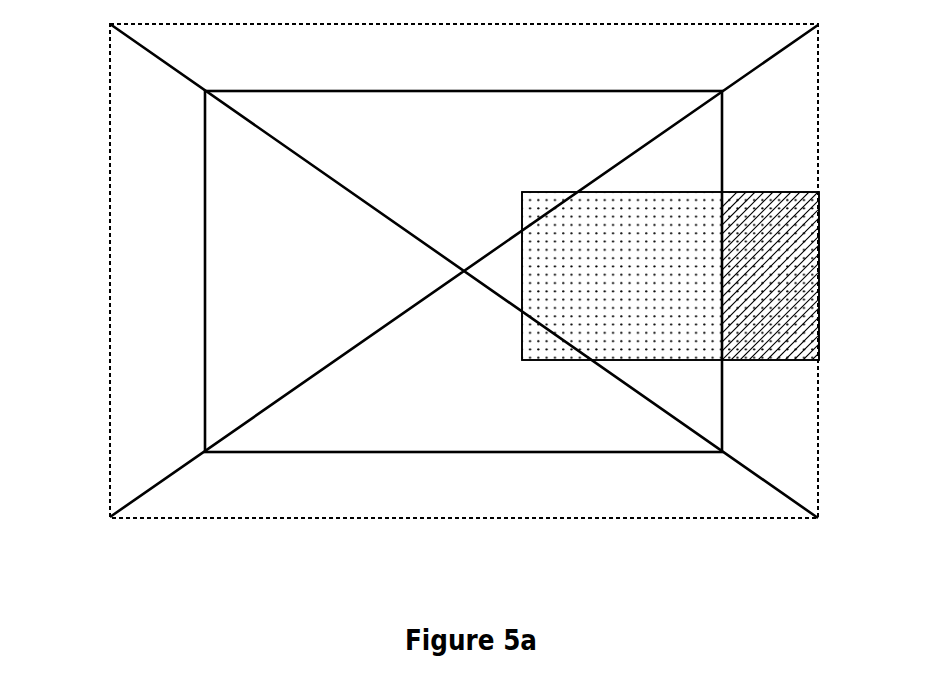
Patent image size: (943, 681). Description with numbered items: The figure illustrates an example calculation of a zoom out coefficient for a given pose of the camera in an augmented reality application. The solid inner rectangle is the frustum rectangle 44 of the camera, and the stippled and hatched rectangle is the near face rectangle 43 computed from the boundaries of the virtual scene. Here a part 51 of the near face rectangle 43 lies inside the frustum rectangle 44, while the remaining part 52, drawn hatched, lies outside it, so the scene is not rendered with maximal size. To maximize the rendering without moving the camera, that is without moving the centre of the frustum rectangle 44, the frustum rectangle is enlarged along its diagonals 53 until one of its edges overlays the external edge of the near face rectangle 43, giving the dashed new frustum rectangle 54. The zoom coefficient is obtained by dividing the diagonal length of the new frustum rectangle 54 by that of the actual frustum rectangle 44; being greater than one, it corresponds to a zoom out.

The near face rectangle 43 is at (690, 192).
The frustum rectangle 44 is at (205, 183).
The part of the near face rectangle inside the frustum rectangle 51 is at (608, 292).
The remaining part of the near face rectangle 52 is at (790, 276).
The diagonals 53 is at (307, 382).
The new frustum rectangle 54 is at (110, 372).